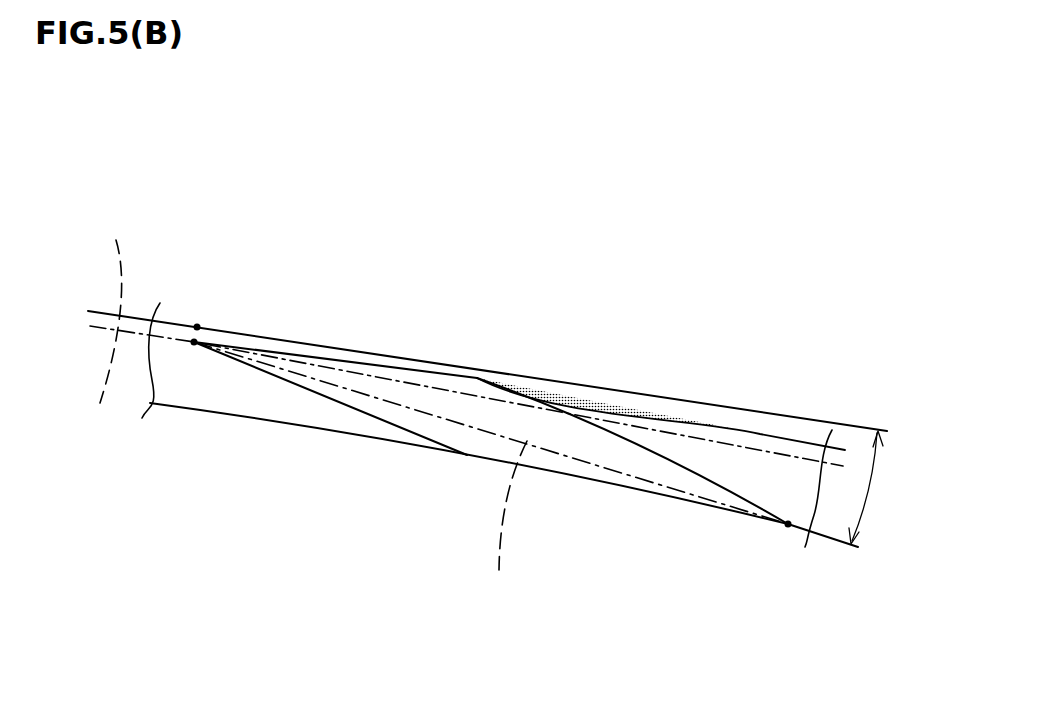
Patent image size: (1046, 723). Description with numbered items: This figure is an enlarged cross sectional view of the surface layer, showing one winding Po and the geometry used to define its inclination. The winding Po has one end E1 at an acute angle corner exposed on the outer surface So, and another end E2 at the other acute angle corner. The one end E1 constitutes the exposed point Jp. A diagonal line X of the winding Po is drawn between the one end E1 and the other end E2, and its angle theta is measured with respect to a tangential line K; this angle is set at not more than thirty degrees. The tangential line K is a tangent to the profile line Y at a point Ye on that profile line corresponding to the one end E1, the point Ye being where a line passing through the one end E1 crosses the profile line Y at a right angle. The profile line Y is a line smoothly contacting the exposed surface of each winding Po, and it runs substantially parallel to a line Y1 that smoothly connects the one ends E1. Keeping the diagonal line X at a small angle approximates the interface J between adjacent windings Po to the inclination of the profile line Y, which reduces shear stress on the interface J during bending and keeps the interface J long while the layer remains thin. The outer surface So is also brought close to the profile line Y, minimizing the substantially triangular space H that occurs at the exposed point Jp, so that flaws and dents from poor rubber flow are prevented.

The tangential line K is at (727, 405).
The profile line Y is at (111, 307).
The line smoothly connecting the one ends Y1 is at (119, 369).
The point corresponding to the one end Ye is at (197, 322).
The one end of the winding E1 is at (259, 276).
The exposed point Jp is at (204, 337).
The other end of the winding E2 is at (787, 531).
The interface between the windings J is at (342, 405).
The winding Po is at (462, 426).
The space having a substantially triangle cross section H is at (553, 397).
The outer surface So is at (628, 410).
The diagonal line of the winding X is at (509, 526).